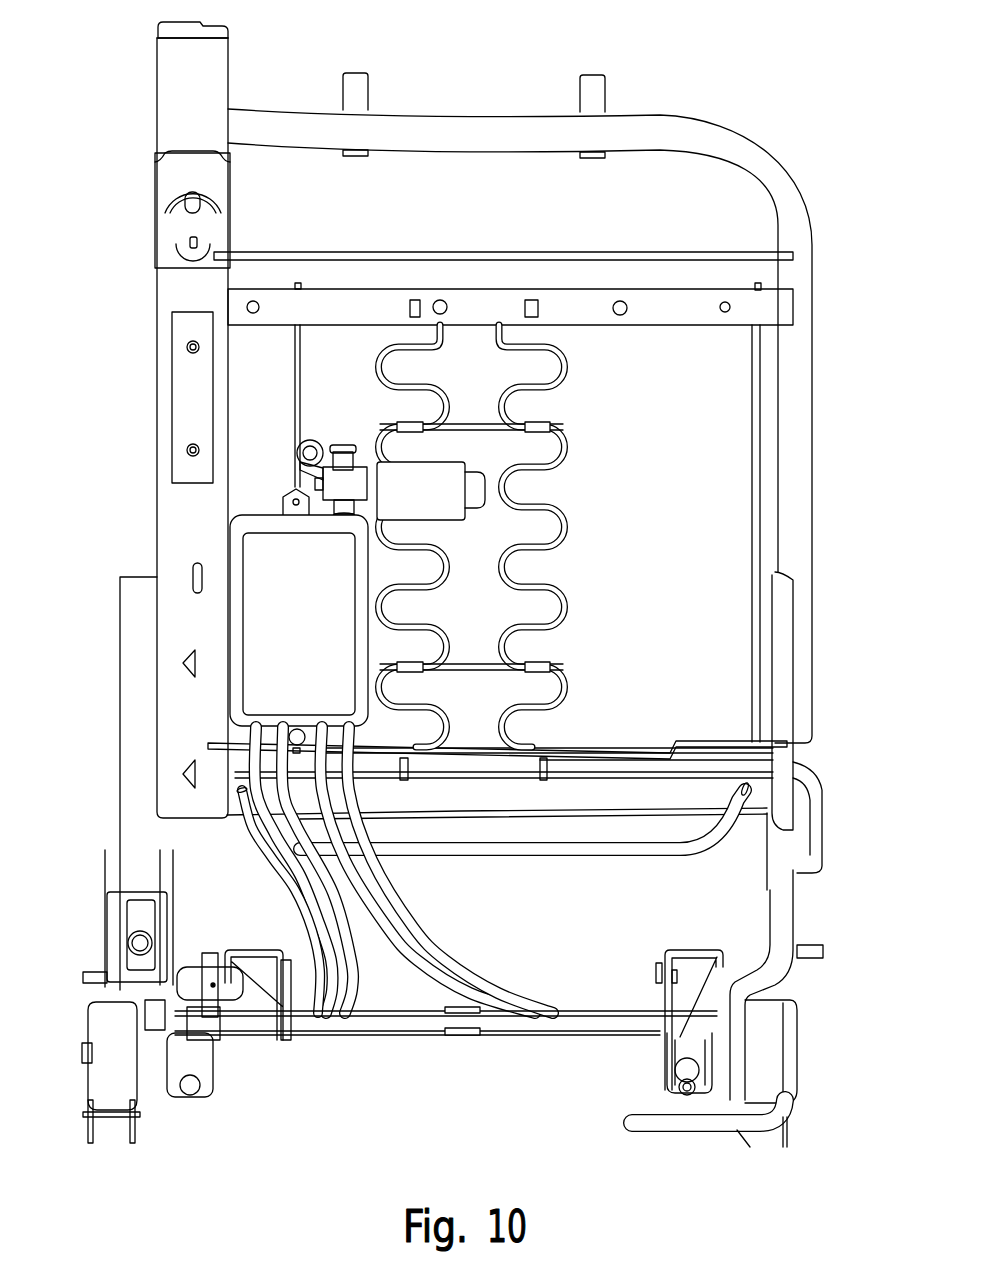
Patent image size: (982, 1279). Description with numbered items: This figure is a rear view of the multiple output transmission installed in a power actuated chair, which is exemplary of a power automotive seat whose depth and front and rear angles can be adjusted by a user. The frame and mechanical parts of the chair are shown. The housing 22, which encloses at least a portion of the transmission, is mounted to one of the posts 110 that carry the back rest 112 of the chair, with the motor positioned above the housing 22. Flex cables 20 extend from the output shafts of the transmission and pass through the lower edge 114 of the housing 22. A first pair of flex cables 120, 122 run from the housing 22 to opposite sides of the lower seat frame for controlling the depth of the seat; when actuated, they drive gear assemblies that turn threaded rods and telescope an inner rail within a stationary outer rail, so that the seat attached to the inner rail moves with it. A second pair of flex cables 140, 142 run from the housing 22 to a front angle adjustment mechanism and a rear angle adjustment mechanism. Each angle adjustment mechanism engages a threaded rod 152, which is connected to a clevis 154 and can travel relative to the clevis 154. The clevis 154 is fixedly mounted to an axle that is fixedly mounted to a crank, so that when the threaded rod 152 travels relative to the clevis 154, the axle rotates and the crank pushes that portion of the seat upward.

The post 110 is at (190, 507).
The back rest 112 is at (698, 310).
The housing 22 is at (265, 612).
The lower edge 114 is at (272, 730).
The flex cable 142 is at (297, 903).
The flex cable 20 is at (390, 888).
The flex cable 140 is at (437, 955).
The clevis 154 is at (665, 1052).
The threaded rod 152 is at (682, 1093).
The flex cable 122 is at (357, 985).
The flex cable 120 is at (405, 957).